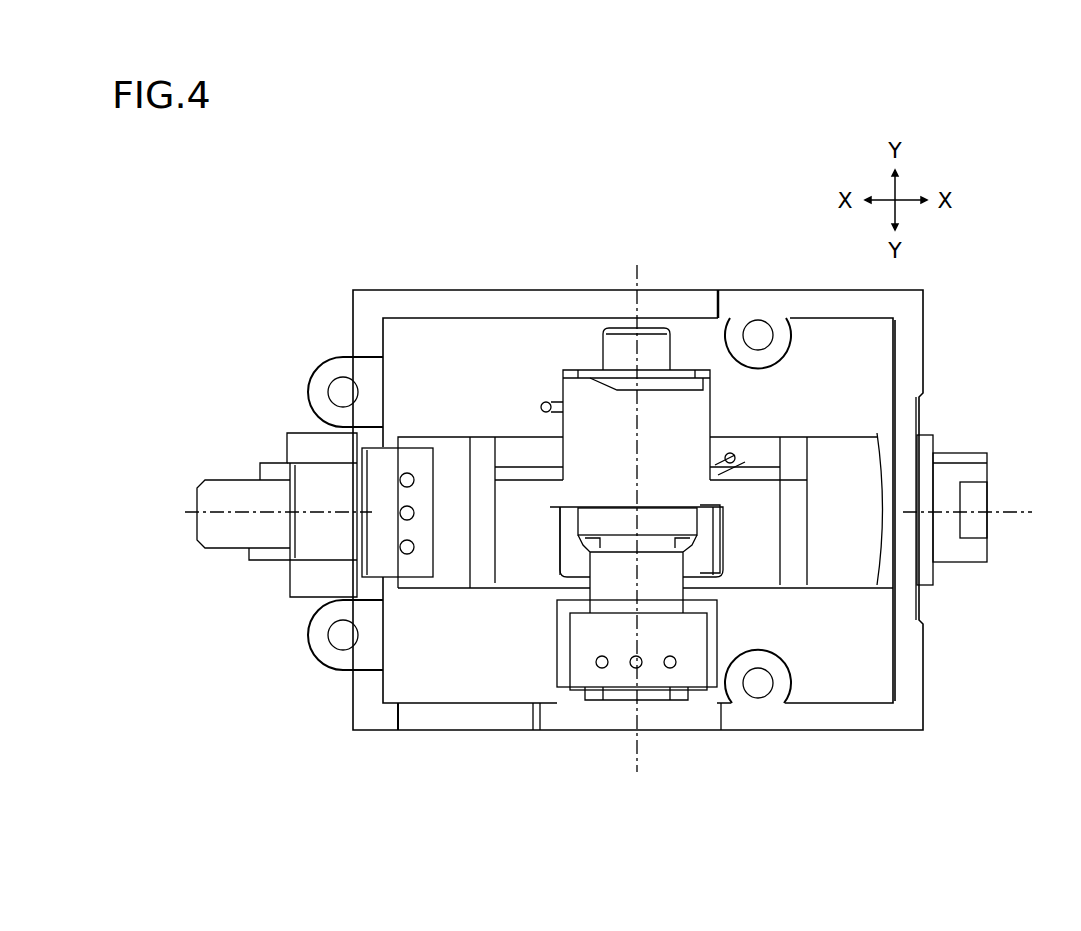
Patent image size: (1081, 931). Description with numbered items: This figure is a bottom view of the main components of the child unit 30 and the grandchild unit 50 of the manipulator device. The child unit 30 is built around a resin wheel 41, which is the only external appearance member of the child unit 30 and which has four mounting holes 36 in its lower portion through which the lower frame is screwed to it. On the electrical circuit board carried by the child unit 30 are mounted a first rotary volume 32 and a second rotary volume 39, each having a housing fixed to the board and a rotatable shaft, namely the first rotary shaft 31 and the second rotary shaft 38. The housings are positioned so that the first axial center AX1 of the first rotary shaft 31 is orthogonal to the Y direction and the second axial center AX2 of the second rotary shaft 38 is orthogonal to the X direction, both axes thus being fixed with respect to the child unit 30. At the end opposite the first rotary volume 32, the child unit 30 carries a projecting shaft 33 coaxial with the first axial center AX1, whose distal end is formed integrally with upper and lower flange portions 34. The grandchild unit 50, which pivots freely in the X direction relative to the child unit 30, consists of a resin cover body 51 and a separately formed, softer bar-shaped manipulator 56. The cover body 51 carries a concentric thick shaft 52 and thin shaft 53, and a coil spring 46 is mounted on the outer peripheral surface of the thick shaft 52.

The child unit 30 is at (351, 290).
The first rotary shaft 31 is at (235, 540).
The first rotary volume 32 is at (342, 527).
The projecting shaft 33 is at (973, 453).
The flange portions 34 is at (973, 500).
The mounting holes 36 is at (341, 384).
The second rotary shaft 38 is at (613, 542).
The second rotary volume 39 is at (620, 598).
The wheel 41 is at (420, 305).
The coil spring 46 is at (545, 400).
The grandchild unit 50 is at (582, 129).
The cover body 51 is at (608, 490).
The thick shaft 52 is at (568, 392).
The thin shaft 53 is at (627, 340).
The manipulator 56 is at (660, 520).
The first axial center AX1 is at (253, 512).
The second axial center AX2 is at (637, 712).